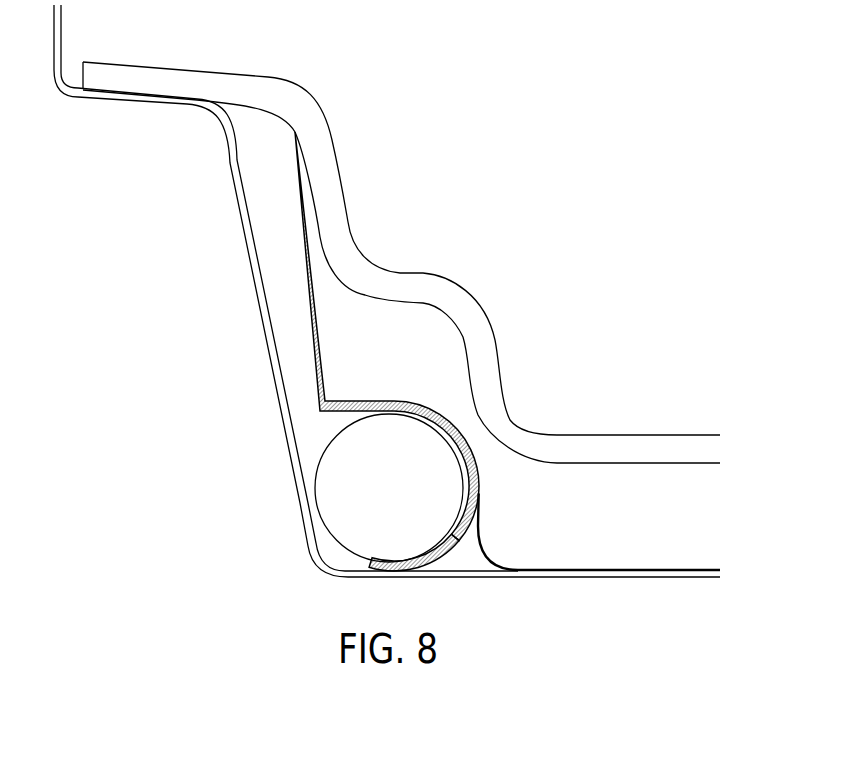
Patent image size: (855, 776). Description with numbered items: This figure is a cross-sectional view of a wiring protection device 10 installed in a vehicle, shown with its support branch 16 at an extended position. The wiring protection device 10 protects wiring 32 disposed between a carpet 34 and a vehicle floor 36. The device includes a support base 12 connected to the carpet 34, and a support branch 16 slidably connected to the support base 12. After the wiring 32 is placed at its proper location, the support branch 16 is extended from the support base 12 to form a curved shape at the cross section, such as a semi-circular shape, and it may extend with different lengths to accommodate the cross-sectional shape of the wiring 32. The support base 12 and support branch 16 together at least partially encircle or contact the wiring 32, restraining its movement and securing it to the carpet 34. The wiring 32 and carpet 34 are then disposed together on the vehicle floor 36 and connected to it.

The wiring protection device 10 is at (483, 487).
The support base 12 is at (407, 401).
The support branch 16 is at (425, 560).
The wiring 32 is at (402, 486).
The carpet 34 is at (453, 298).
The vehicle floor 36 is at (274, 377).